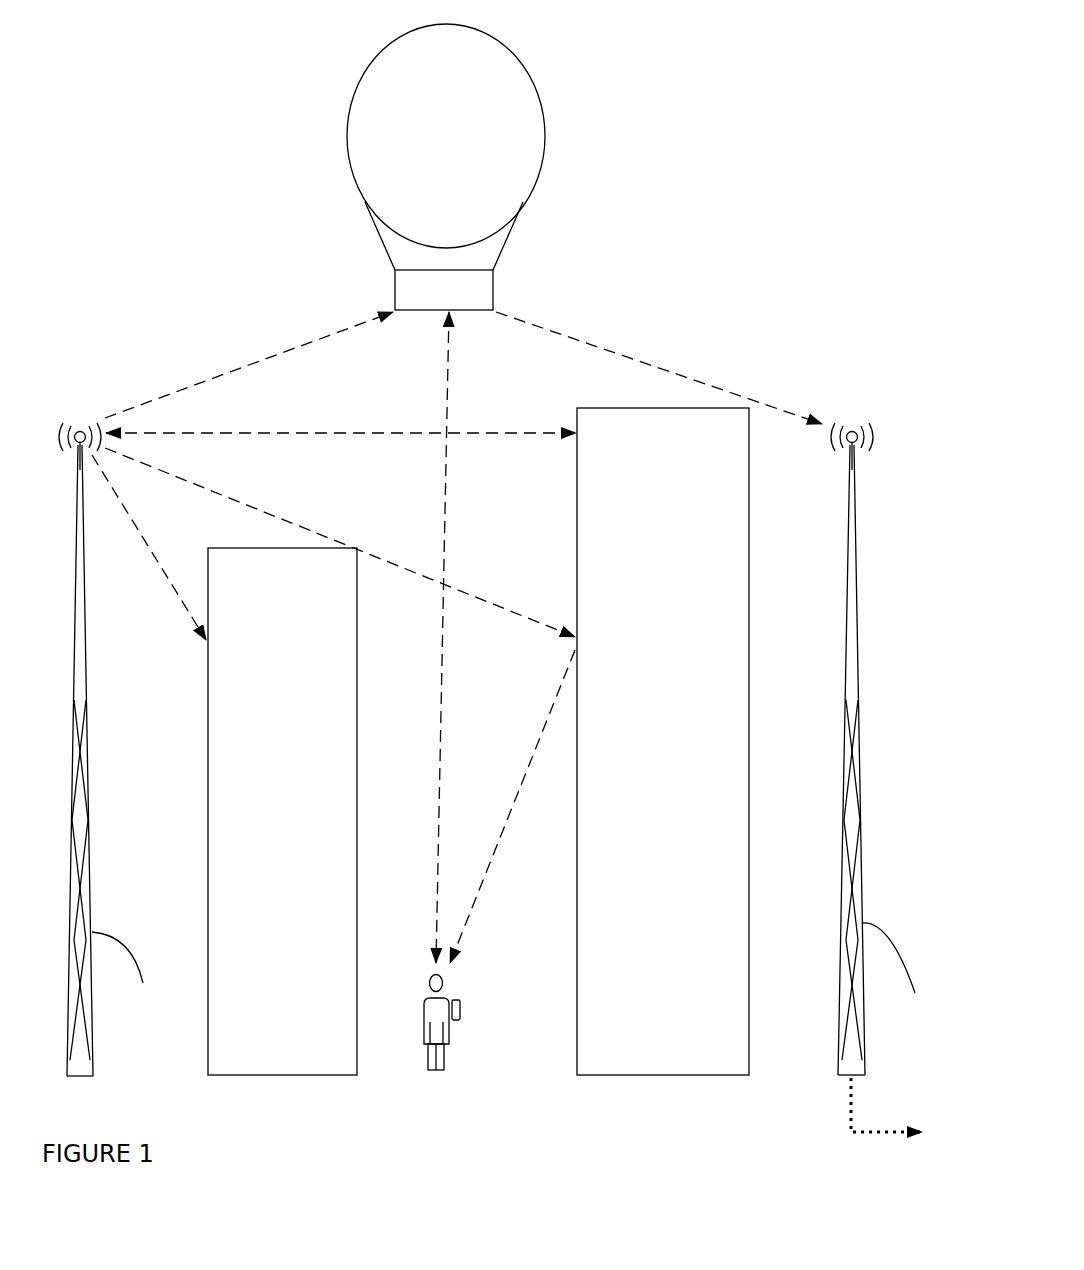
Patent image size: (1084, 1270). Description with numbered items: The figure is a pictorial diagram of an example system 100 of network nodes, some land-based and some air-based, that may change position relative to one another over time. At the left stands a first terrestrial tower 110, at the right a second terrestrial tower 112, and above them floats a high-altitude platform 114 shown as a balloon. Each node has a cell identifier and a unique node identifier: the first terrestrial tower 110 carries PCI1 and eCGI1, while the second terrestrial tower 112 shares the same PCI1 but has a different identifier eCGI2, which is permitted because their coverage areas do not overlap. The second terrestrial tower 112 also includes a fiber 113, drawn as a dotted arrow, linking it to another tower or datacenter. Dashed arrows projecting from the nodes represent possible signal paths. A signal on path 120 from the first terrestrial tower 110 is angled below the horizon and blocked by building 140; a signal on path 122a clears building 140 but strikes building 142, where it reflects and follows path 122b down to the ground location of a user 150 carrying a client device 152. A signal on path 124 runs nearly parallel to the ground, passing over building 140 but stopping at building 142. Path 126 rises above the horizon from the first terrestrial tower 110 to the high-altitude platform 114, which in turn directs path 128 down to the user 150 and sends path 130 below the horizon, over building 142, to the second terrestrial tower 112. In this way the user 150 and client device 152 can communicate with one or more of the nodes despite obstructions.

The system 100 is at (73, 1122).
The first terrestrial tower 110 is at (128, 711).
The second terrestrial tower 112 is at (897, 710).
The fiber 113 is at (886, 1124).
The high-altitude platform 114 is at (431, 144).
The path 120 is at (149, 547).
The path 122a is at (340, 542).
The path 122b is at (512, 806).
The path 124 is at (341, 416).
The path 126 is at (249, 365).
The path 128 is at (428, 637).
The path 130 is at (659, 368).
The building 140 is at (268, 829).
The building 142 is at (642, 751).
The user 150 is at (447, 1047).
The client device 152 is at (475, 1010).